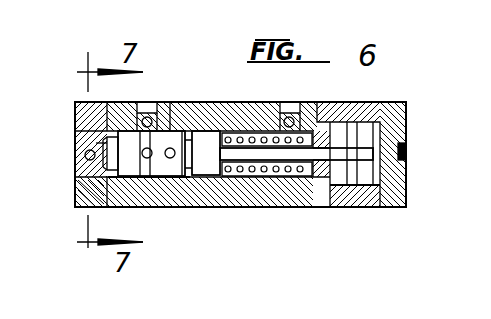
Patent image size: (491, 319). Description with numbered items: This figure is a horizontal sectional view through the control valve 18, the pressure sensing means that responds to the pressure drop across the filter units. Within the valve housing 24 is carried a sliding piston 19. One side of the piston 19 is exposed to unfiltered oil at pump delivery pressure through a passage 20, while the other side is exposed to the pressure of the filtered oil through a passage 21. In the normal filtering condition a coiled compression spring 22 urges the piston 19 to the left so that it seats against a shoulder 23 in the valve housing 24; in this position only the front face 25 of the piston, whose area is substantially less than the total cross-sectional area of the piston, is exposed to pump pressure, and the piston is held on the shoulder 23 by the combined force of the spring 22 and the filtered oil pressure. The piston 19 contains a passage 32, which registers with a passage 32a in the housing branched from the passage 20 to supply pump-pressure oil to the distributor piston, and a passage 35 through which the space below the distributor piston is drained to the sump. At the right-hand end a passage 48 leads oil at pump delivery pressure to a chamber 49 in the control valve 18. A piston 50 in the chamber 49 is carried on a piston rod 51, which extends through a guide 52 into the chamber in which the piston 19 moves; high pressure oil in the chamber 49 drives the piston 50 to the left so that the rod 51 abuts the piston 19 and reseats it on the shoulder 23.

The control valve 18 is at (240, 212).
The sliding piston 19 is at (122, 140).
The passage 20 is at (80, 175).
The passage 21 is at (293, 114).
The coiled compression spring 22 is at (246, 103).
The shoulder 23 is at (110, 136).
The valve housing 24 is at (182, 95).
The front face 25 is at (103, 144).
The passage 32 is at (187, 162).
The passage 32a is at (100, 207).
The passage 35 is at (135, 200).
The passage 48 is at (406, 165).
The chamber 49 is at (355, 186).
The piston 50 is at (352, 130).
The piston rod 51 is at (277, 160).
The guide 52 is at (322, 168).